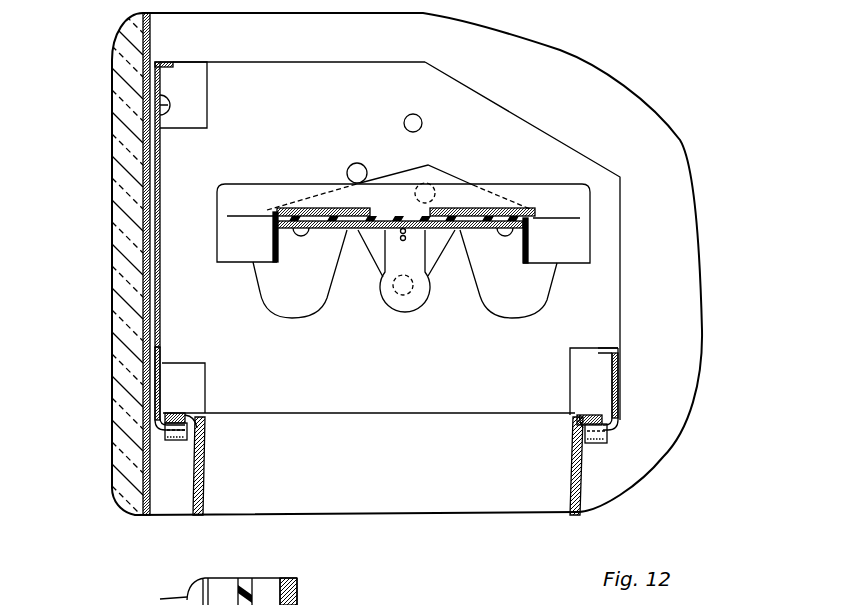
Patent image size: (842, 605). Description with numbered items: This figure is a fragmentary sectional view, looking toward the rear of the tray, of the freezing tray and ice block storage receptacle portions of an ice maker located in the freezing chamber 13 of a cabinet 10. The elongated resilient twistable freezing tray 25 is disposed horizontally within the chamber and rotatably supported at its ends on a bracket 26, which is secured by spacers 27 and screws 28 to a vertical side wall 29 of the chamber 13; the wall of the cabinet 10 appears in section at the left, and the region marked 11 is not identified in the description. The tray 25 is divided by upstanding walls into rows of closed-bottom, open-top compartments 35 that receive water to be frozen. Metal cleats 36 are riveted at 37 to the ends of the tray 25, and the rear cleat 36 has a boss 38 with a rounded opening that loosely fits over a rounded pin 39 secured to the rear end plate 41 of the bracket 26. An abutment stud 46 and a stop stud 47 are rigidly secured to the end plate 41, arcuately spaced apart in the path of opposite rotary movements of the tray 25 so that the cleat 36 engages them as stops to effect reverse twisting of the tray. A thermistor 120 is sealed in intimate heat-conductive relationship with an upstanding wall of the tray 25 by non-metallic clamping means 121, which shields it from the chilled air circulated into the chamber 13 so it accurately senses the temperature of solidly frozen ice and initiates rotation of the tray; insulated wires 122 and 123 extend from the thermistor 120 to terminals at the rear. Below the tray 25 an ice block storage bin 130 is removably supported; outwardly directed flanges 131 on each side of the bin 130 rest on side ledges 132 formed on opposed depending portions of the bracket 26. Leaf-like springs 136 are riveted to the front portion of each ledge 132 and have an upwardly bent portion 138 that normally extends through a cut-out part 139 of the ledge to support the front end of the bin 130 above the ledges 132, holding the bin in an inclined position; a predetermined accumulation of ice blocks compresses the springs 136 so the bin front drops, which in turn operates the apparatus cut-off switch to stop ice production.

The cabinet 10 is at (110, 207).
The outer shell 11 is at (118, 137).
The freezing chamber 13 is at (653, 434).
The freezing tray 25 is at (592, 232).
The bracket 26 is at (285, 62).
The spacers 27 is at (152, 92).
The screws 28 is at (168, 105).
The vertical side wall 29 is at (160, 497).
The compartments 35 is at (295, 302).
The metal cleats 36 is at (453, 213).
The rivets 37 is at (300, 236).
The boss 38 is at (429, 168).
The pin 39 is at (420, 183).
The rear end plate 41 is at (428, 85).
The abutment stud 46 is at (353, 163).
The stop stud 47 is at (408, 115).
The thermistor 120 is at (400, 296).
The clamping means 121 is at (421, 296).
The insulated wire 122 is at (407, 240).
The insulated wire 123 is at (401, 234).
The ice block storage bin 130 is at (572, 492).
The flanges 131 is at (180, 412).
The side ledges 132 is at (163, 419).
The leaf-like springs 136 is at (177, 441).
The upwardly bent portion 138 is at (189, 423).
The cut-out part 139 is at (157, 371).